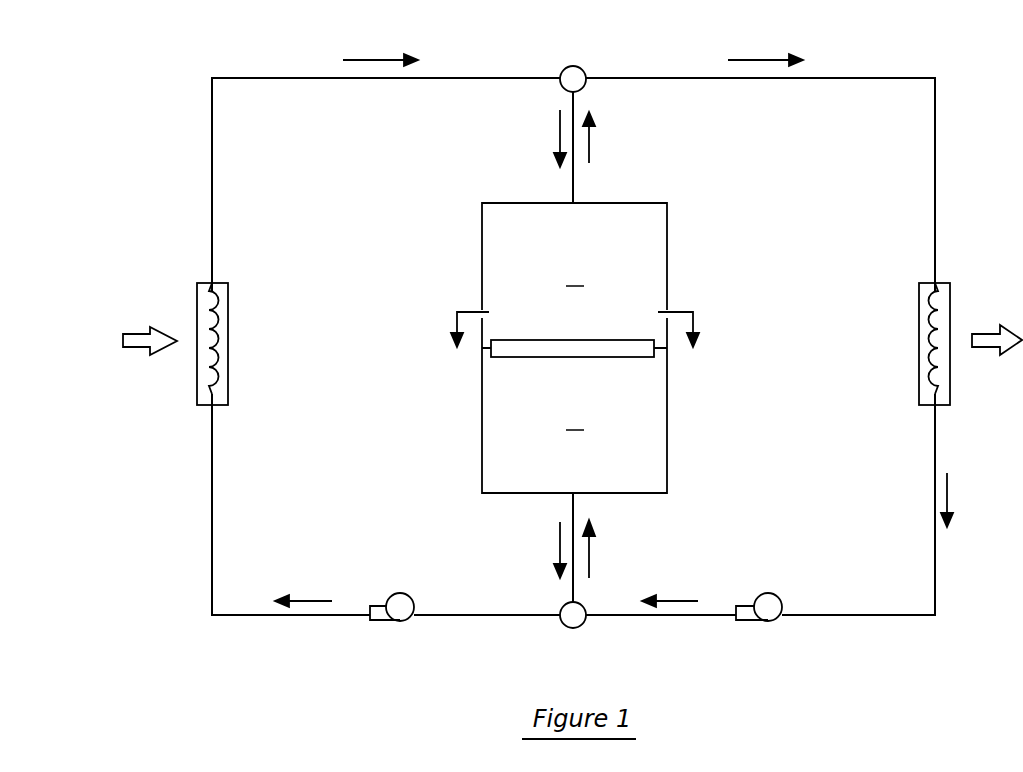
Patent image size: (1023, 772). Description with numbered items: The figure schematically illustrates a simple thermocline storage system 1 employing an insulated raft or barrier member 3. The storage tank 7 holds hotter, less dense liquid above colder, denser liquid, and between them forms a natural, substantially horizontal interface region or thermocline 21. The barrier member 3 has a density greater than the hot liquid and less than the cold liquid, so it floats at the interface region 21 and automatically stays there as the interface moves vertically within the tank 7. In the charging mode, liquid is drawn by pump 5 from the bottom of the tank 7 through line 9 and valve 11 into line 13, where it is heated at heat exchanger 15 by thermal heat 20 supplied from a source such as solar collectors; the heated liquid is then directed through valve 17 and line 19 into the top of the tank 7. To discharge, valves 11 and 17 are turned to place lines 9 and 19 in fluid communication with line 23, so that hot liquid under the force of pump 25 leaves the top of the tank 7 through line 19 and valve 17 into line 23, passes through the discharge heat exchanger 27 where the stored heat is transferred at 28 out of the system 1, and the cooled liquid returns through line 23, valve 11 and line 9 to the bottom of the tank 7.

The thermocline storage system 1 is at (162, 72).
The raft or barrier member 3 is at (595, 340).
The pump 5 is at (414, 597).
The storage tank 7 is at (482, 398).
The line 9 is at (572, 585).
The valve 11 is at (589, 608).
The line 13 is at (283, 78).
The heat exchanger 15 is at (228, 312).
The valve 17 is at (580, 72).
The line 19 is at (574, 183).
The thermal heat 20 is at (140, 333).
The interface region or thermocline 21 is at (678, 354).
The line 23 is at (852, 78).
The pump 25 is at (750, 621).
The discharge heat exchanger 27 is at (950, 295).
The transferred heat 28 is at (990, 348).